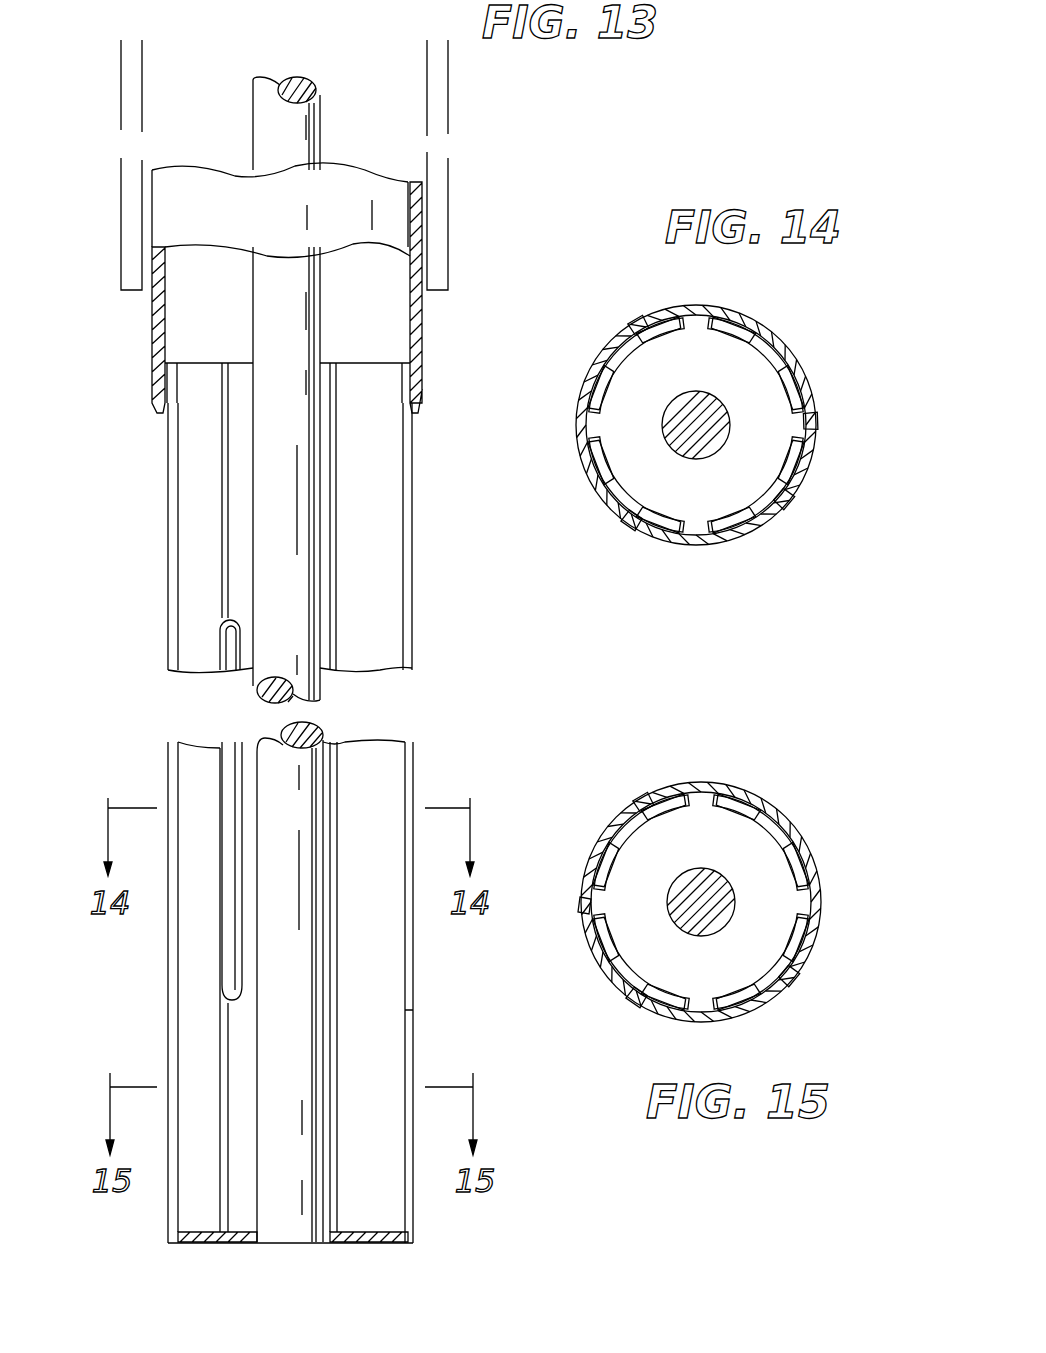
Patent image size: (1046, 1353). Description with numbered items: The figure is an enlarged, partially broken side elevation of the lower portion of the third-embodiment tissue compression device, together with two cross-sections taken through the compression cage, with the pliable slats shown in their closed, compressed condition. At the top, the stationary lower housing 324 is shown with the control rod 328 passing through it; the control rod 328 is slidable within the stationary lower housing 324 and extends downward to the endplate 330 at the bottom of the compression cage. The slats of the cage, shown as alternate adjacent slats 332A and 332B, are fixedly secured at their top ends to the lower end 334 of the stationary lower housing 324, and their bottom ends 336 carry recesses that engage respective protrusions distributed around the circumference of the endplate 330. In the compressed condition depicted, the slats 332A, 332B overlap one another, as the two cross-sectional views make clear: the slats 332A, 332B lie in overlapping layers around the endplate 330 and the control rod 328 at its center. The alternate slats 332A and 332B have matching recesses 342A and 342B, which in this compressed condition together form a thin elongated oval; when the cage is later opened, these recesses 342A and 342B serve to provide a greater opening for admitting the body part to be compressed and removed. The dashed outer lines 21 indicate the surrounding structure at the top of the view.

In FIG. 13, the endoscope sheath / outer tube 21 is at (445, 148).
In FIG. 13, the stationary lower housing 324 is at (383, 342).
In FIG. 13, the lower end of the stationary lower housing 334 is at (197, 363).
In FIG. 13, the control rod 328 is at (288, 1223).
In FIG. 14, the control rod 328 is at (605, 425).
In FIG. 15, the control rod 328 is at (772, 923).
In FIG. 13, the endplate 330 is at (225, 1243).
In FIG. 14, the endplate 330 is at (733, 399).
In FIG. 15, the endplate 330 is at (730, 877).
In FIG. 13, the slat 332A is at (197, 955).
In FIG. 14, the slat 332A is at (700, 455).
In FIG. 15, the slat 332A is at (716, 918).
In FIG. 13, the slat 332B is at (202, 1045).
In FIG. 14, the slat 332B is at (677, 405).
In FIG. 15, the slat 332B is at (698, 868).
In FIG. 13, the bottom ends of the slats 336 is at (172, 1232).
In FIG. 14, the recess 342A is at (702, 418).
In FIG. 14, the recess 342B is at (689, 358).